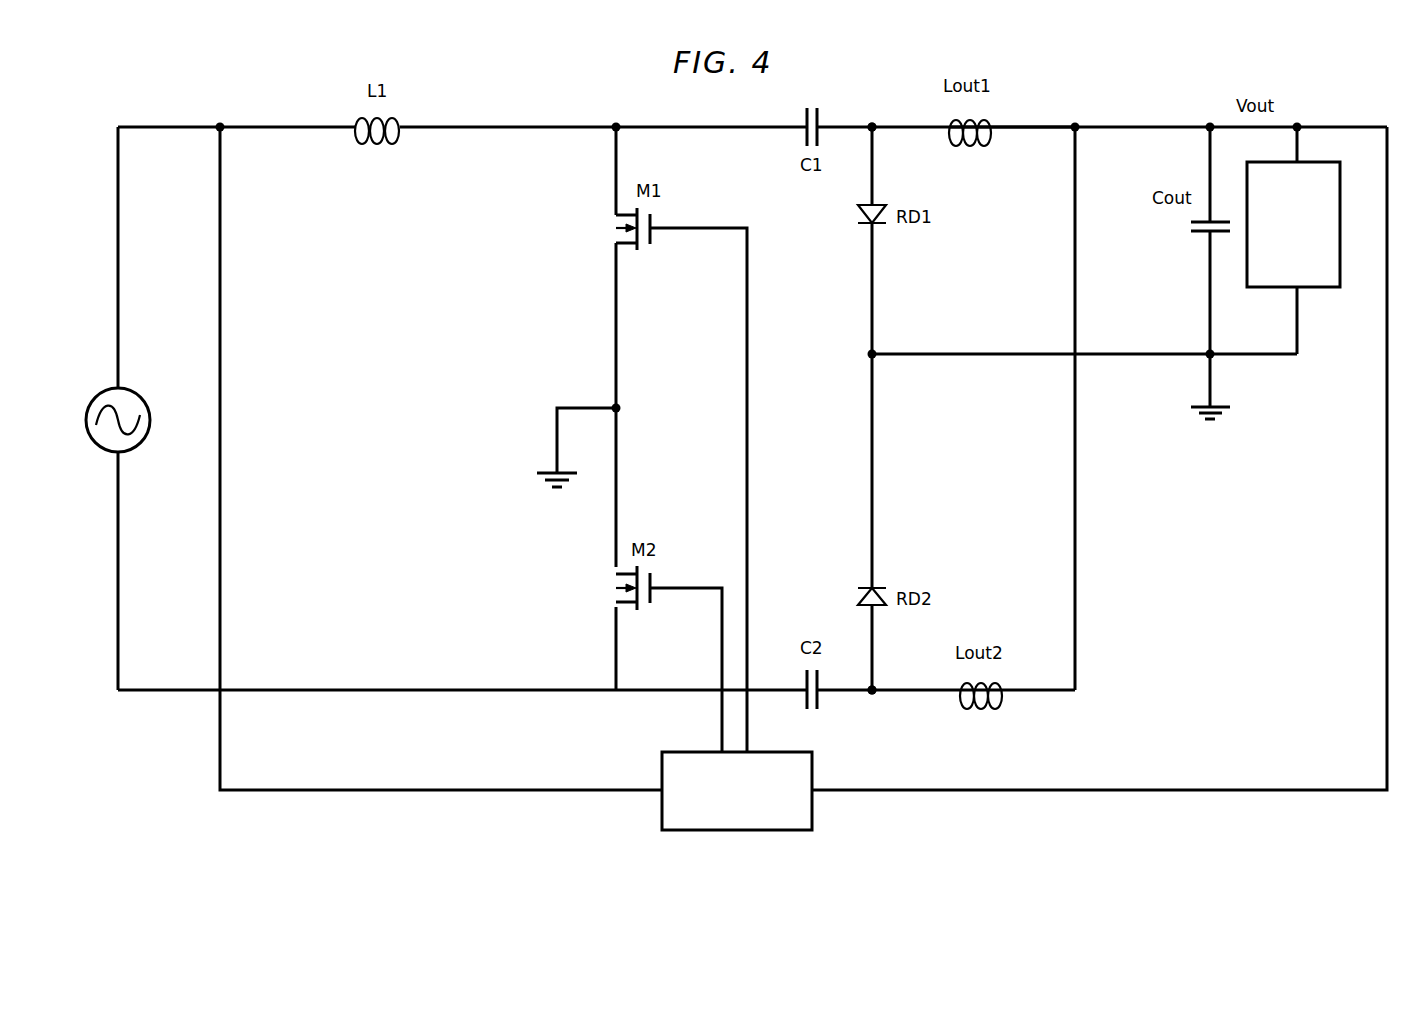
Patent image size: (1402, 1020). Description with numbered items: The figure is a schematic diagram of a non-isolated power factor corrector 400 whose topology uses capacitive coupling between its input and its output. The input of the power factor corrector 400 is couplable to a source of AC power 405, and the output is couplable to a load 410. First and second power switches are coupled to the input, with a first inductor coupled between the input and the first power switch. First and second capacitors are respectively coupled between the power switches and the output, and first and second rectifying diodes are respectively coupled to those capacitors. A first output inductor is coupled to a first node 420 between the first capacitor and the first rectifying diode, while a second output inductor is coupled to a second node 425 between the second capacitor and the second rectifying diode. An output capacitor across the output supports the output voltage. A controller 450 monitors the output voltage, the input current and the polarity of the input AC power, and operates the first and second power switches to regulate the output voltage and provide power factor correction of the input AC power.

The non-isolated power factor corrector 400 is at (492, 74).
The source of AC power 405 is at (145, 398).
The load 410 is at (1320, 290).
The first node 420 is at (875, 131).
The second node 425 is at (875, 694).
The controller 450 is at (750, 832).